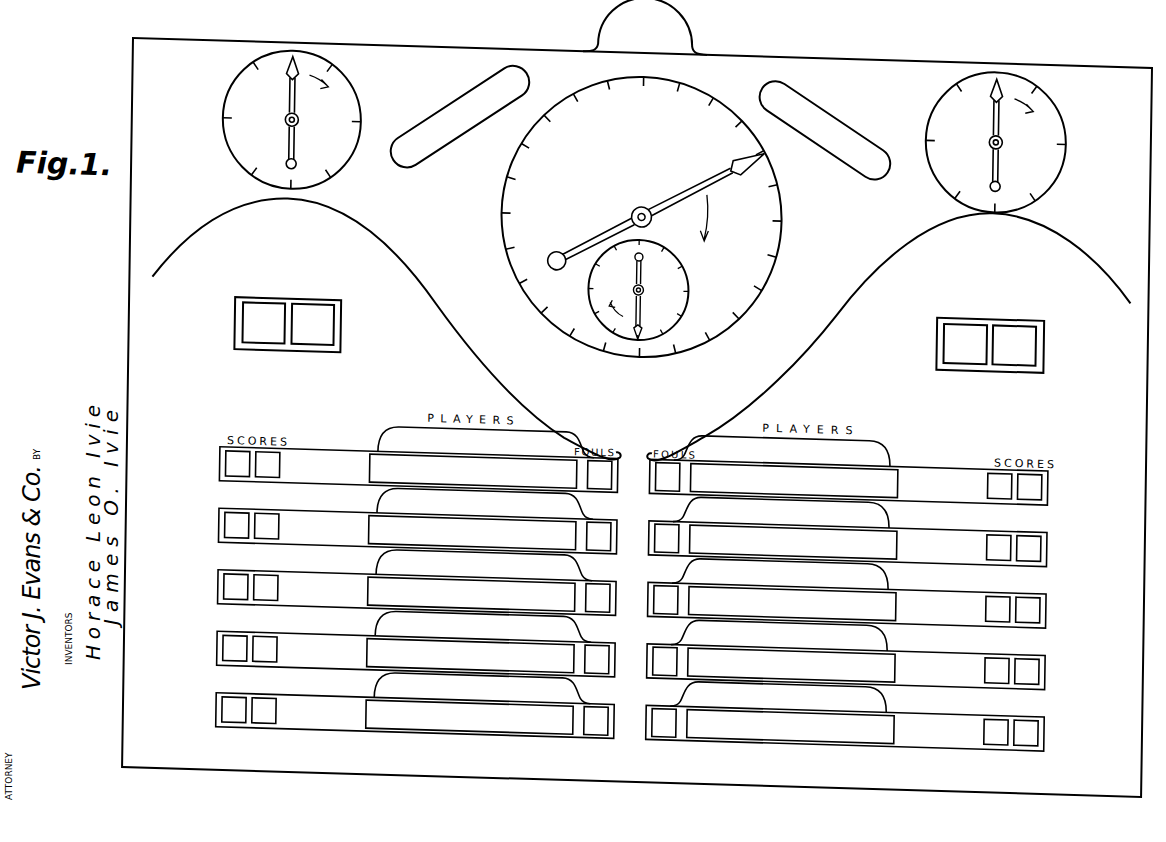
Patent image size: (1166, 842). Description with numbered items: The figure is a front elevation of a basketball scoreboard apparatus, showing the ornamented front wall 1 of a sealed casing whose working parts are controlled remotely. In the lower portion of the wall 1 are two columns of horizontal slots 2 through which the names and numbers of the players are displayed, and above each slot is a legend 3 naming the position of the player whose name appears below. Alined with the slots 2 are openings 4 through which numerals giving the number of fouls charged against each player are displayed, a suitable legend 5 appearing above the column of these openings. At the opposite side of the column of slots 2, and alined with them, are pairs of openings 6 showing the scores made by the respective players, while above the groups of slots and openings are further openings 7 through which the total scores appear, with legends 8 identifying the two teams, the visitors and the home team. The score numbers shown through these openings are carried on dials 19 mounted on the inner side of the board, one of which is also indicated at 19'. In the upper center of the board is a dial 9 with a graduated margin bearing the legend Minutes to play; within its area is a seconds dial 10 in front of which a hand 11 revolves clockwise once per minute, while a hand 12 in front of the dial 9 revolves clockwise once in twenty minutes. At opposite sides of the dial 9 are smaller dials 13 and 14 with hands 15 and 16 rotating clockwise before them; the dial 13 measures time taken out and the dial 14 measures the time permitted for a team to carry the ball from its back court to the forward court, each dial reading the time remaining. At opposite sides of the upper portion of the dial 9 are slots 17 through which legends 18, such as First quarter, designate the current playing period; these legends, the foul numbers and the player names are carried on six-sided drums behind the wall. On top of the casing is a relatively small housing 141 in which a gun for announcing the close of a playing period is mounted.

The front wall 1 is at (133, 264).
The housing 141 is at (688, 21).
The horizontal slots 2 is at (370, 650).
The legend 3 is at (384, 682).
The openings 4 is at (604, 538).
The legend 5 is at (661, 422).
The pairs of openings 6 is at (240, 535).
The openings 7 is at (305, 339).
The legends 8 is at (213, 273).
The dial 9 is at (771, 262).
The seconds dial 10 is at (600, 296).
The hand 11 is at (647, 292).
The hand 12 is at (676, 178).
The dial 13 is at (231, 141).
The dial 14 is at (1050, 138).
The hand 15 is at (303, 128).
The hand 16 is at (1001, 122).
The slots 17 is at (441, 140).
The legends 18 is at (431, 120).
The dials 19 is at (670, 525).
The left digit windows 19' is at (602, 541).